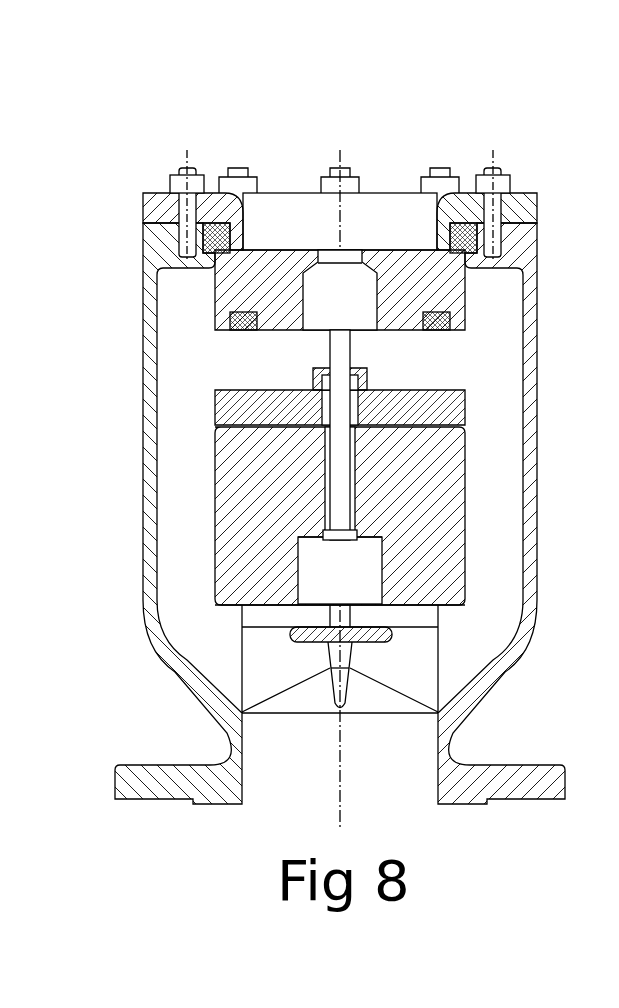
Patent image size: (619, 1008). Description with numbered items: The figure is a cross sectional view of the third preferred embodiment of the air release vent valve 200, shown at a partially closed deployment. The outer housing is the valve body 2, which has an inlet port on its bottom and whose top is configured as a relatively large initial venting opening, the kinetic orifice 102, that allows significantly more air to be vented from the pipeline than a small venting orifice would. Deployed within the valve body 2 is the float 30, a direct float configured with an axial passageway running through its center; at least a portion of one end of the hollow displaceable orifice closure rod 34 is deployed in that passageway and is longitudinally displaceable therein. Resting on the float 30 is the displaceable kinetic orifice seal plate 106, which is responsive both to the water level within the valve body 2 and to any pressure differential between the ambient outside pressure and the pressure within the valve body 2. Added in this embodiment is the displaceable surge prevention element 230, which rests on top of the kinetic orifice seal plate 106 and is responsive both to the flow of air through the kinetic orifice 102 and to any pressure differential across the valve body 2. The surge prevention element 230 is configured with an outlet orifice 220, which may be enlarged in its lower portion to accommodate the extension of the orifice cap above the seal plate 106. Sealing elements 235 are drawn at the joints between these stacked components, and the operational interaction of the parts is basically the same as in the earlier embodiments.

The air release vent valve 200 is at (183, 142).
The valve body 2 is at (528, 507).
The kinetic orifice 102 is at (407, 208).
The outlet orifice 220 is at (318, 300).
The surge prevention element 230 is at (423, 287).
The seal 235 is at (235, 323).
The kinetic orifice seal plate 106 is at (467, 403).
The orifice closure rod 34 is at (340, 458).
The float 30 is at (253, 530).